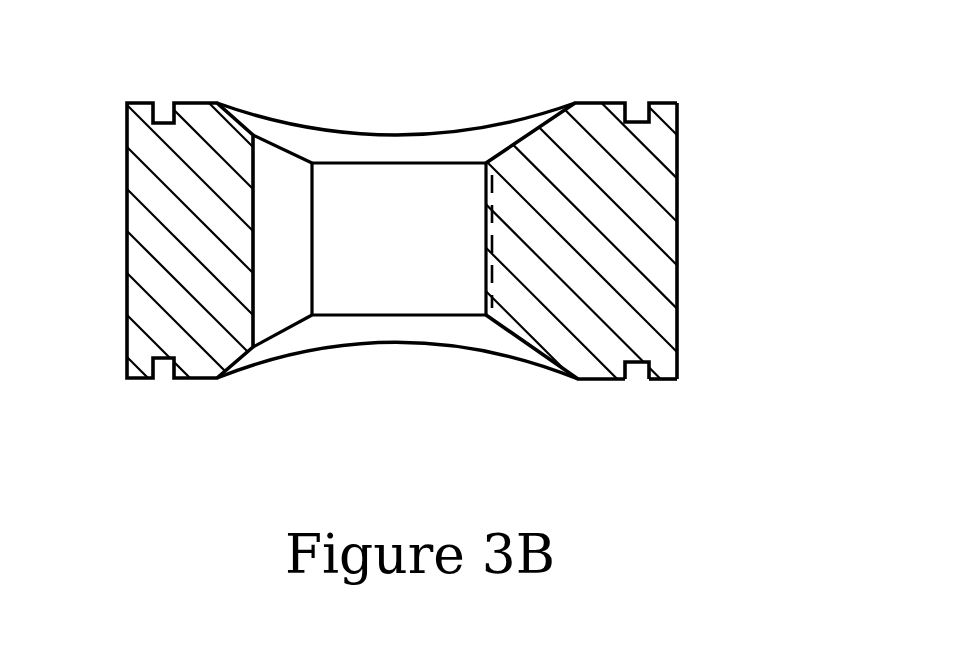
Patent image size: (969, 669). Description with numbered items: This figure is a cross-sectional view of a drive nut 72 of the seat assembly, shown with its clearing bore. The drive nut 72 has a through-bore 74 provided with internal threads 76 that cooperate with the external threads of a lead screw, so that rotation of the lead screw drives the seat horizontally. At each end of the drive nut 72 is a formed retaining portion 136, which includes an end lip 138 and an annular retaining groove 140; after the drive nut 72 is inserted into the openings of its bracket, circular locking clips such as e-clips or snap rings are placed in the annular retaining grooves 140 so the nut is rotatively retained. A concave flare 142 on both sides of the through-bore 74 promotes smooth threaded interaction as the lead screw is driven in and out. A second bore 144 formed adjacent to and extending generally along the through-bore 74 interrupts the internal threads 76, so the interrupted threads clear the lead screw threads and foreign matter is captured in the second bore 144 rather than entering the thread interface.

The drive nut 72 is at (211, 101).
The through-bore 74 is at (368, 160).
The internal threads 76 is at (493, 175).
The retaining portion 136 is at (680, 106).
The end lip 138 is at (680, 148).
The annular retaining groove 140 is at (655, 368).
The concave flare 142 is at (462, 328).
The second bore 144 is at (272, 275).